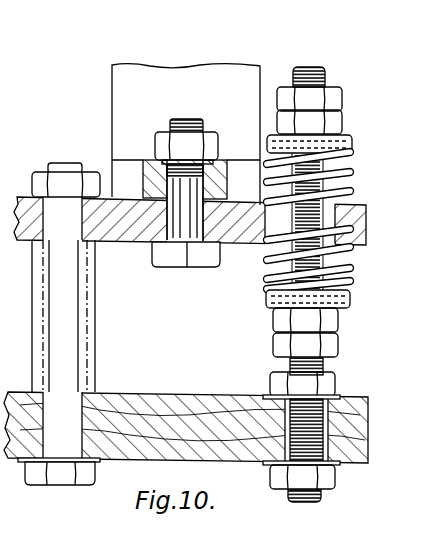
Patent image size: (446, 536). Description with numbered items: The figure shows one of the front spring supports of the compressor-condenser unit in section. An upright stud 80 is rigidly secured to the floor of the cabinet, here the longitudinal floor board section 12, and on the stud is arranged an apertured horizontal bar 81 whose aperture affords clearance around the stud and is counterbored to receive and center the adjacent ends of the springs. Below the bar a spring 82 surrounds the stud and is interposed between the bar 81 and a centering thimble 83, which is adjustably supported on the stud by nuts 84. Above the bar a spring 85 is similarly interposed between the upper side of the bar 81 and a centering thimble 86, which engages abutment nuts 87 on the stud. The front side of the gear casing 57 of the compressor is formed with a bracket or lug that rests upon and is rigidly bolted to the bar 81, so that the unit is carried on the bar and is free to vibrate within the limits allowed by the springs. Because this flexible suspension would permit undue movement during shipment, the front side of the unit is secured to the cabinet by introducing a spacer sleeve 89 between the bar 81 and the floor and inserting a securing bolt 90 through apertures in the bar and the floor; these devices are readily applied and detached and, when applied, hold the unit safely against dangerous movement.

The longitudinal floor board section 12 is at (138, 435).
The gear casing 57 is at (135, 66).
The upright stud 80 is at (318, 72).
The apertured horizontal bar 81 is at (132, 233).
The spring 82 is at (270, 268).
The centering thimble 83 is at (266, 300).
The nuts 84 is at (273, 340).
The spring 85 is at (349, 176).
The centering thimble 86 is at (350, 138).
The abutment nuts 87 is at (338, 122).
The spacer sleeve 89 is at (95, 331).
The securing bolt 90 is at (60, 163).